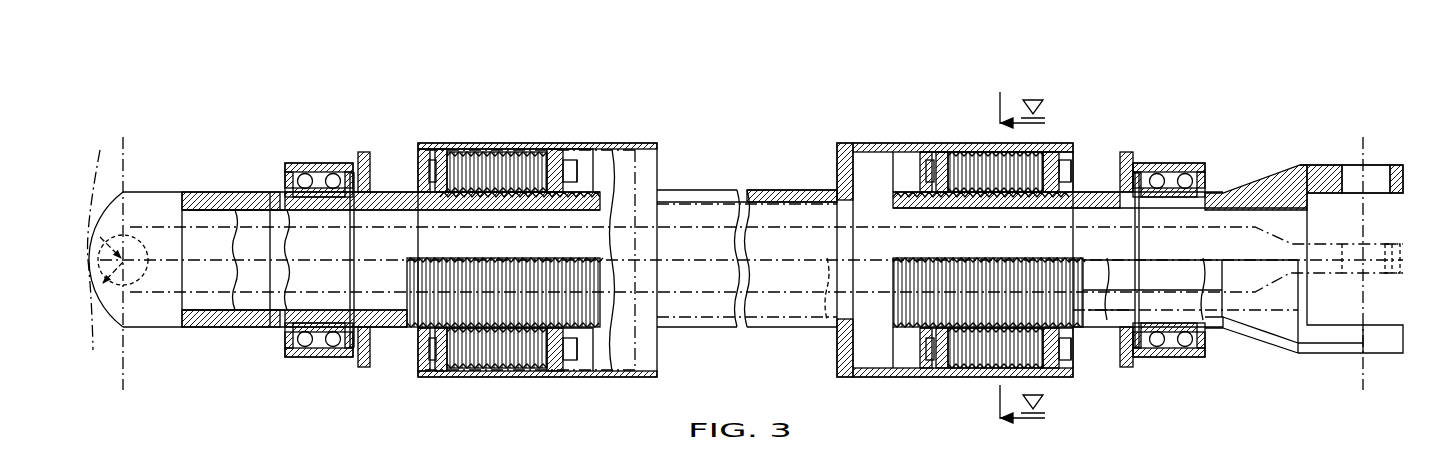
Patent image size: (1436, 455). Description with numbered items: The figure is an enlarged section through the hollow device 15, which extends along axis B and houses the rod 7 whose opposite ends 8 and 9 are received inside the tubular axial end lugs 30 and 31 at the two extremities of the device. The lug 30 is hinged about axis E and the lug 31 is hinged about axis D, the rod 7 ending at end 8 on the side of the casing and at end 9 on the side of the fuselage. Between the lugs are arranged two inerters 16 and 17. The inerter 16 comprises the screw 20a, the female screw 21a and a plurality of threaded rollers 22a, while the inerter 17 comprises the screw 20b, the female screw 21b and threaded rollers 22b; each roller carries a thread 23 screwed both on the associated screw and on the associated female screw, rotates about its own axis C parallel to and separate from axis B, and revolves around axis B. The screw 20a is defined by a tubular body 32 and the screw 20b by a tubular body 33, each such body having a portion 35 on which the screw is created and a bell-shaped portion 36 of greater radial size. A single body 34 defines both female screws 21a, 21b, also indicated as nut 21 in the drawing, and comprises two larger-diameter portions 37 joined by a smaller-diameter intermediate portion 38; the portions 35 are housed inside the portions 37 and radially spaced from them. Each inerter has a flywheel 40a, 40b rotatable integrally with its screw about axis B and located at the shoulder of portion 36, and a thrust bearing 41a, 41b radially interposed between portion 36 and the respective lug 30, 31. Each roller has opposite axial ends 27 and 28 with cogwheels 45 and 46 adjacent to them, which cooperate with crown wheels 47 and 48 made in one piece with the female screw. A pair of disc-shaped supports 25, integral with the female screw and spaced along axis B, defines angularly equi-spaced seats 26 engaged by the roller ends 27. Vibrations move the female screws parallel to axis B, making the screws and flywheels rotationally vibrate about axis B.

The rod 7 is at (785, 222).
The end of rod 8 is at (104, 318).
The end of rod 9 is at (1372, 268).
The device 15 is at (1255, 142).
The inerter 16 is at (605, 105).
The inerter 17 is at (920, 80).
The screw 20a is at (535, 272).
The screw 20b is at (912, 288).
The nut 21 is at (1035, 367).
The female screw 21a is at (739, 240).
The female screw 21b is at (978, 247).
The threaded rollers 22a is at (497, 160).
The threaded rollers 22b is at (985, 160).
The thread 23 is at (497, 200).
The disc-shaped supports 25 is at (426, 148).
The seats 26 is at (933, 165).
The axial end 27 is at (426, 163).
The axial end 28 is at (568, 172).
The tubular axial end lug 30 is at (163, 192).
The tubular axial end lug 31 is at (1308, 165).
The tubular body 32 is at (383, 208).
The tubular body 33 is at (1182, 145).
The body 34 is at (790, 332).
The portion 35 is at (600, 200).
The bell-shaped portion 36 is at (310, 357).
The portions 37 is at (645, 377).
The portion 38 is at (805, 190).
The flywheel 40a is at (366, 362).
The flywheel 40b is at (1126, 368).
The thrust bearing 41a is at (322, 160).
The thrust bearing 41b is at (1168, 163).
The cogwheel 45 is at (432, 172).
The cogwheel 46 is at (565, 176).
The crown wheel 47 is at (440, 170).
The crown wheel 48 is at (549, 160).
The axis B is at (1390, 255).
The axes C is at (520, 150).
The axis D is at (1367, 157).
The axis E is at (118, 236).